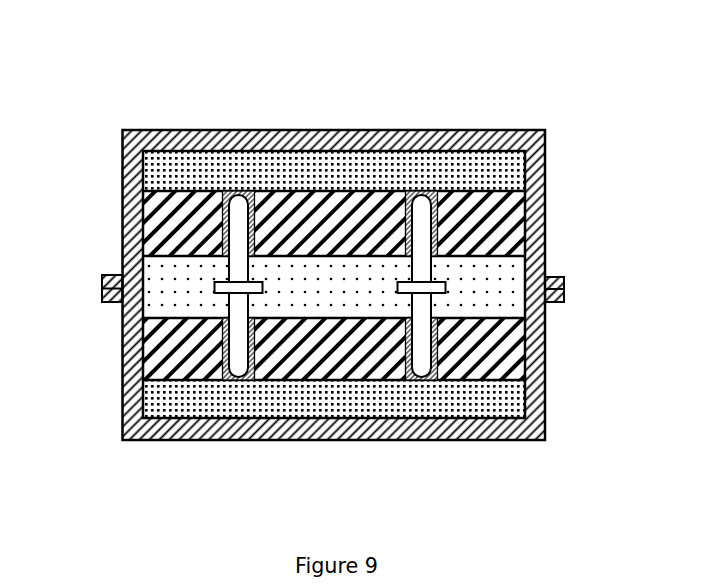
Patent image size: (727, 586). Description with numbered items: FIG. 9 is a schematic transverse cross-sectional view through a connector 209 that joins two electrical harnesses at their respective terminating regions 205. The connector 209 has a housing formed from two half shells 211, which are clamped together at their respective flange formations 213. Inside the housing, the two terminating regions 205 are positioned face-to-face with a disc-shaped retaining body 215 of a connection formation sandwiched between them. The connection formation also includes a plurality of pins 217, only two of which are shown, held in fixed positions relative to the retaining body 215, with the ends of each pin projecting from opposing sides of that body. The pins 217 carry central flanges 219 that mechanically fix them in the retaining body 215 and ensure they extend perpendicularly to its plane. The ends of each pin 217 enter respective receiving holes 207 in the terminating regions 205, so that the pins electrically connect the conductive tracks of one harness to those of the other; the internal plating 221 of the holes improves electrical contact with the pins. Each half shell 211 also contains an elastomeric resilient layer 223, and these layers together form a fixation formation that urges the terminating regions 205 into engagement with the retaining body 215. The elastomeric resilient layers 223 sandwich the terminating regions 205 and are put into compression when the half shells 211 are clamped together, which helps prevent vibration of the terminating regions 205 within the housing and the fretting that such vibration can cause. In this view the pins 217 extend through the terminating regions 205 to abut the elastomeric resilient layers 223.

The connector 209 is at (352, 264).
The half shells 211 is at (337, 135).
The flange formations 213 is at (557, 277).
The elastomeric resilient layers 223 is at (243, 160).
The terminating regions 205 is at (165, 215).
The retaining body 215 is at (162, 285).
The internal plating 221 is at (388, 190).
The receiving holes 207 is at (430, 193).
The pins 217 is at (422, 250).
The central flanges 219 is at (427, 290).